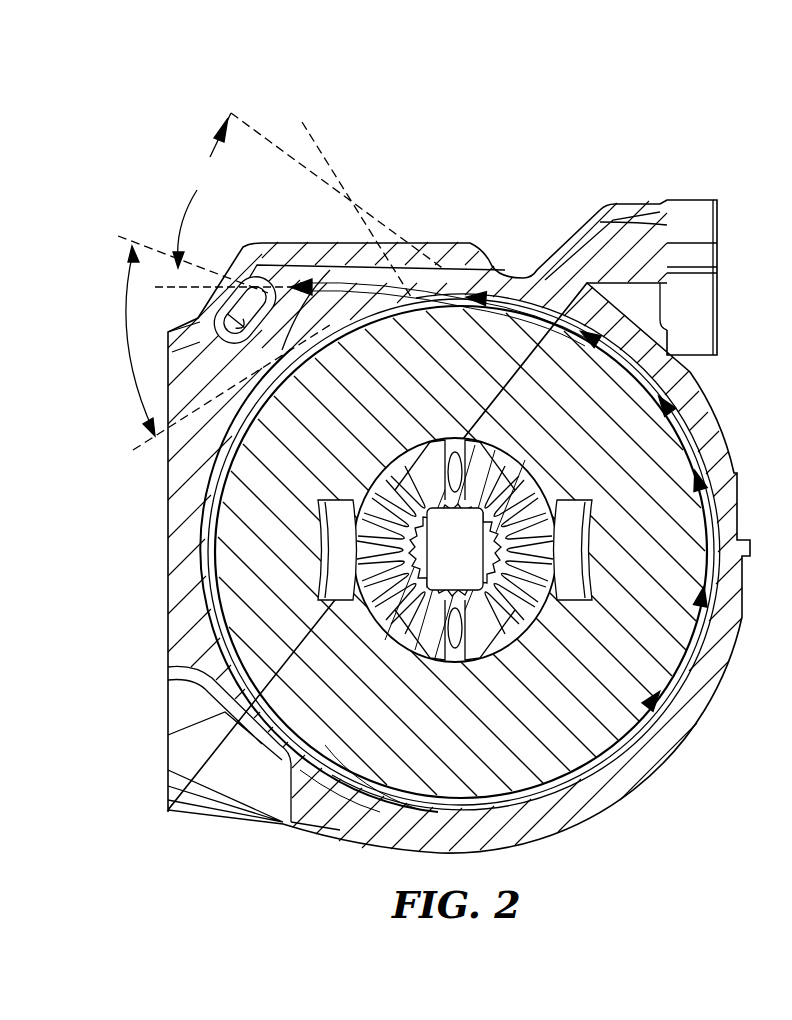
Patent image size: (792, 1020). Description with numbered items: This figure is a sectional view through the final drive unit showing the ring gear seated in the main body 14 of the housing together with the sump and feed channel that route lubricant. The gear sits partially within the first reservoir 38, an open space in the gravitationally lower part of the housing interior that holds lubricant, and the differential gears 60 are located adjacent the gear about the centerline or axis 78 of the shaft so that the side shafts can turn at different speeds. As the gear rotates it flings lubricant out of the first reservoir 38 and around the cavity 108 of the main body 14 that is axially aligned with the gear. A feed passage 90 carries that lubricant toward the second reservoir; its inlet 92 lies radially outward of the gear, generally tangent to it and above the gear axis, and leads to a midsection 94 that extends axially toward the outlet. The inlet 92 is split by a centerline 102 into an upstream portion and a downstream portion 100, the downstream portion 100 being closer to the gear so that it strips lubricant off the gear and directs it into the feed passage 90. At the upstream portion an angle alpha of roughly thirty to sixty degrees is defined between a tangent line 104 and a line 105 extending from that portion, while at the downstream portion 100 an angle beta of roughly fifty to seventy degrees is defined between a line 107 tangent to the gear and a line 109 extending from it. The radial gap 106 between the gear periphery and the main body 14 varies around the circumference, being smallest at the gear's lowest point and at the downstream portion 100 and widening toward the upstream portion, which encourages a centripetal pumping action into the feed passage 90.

The main body 14 is at (398, 262).
The first reservoir 38 is at (570, 780).
The differential gears 60 is at (533, 608).
The centerline or axis 78 is at (459, 543).
The feed passage 90 is at (280, 262).
The inlet 92 is at (440, 277).
The midsection 94 is at (343, 273).
The downstream portion 100 is at (410, 293).
The centerline 102 is at (302, 128).
The tangent line 104 is at (175, 272).
The line 105 is at (327, 174).
The radial gap 106 is at (343, 783).
The line 107 is at (147, 445).
The cavity 108 is at (668, 408).
The line 109 is at (130, 235).